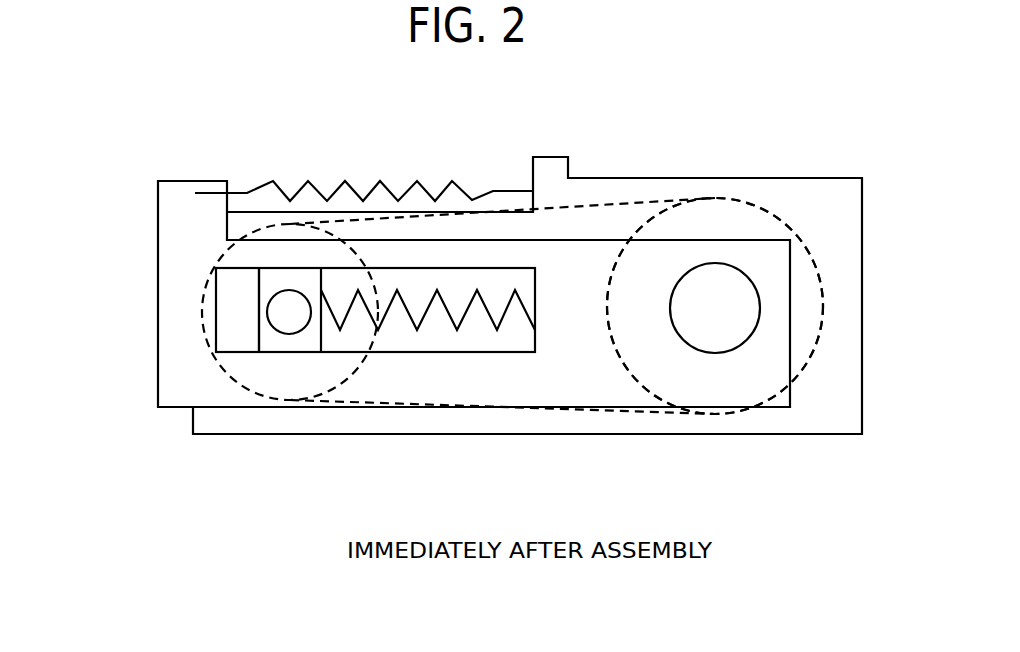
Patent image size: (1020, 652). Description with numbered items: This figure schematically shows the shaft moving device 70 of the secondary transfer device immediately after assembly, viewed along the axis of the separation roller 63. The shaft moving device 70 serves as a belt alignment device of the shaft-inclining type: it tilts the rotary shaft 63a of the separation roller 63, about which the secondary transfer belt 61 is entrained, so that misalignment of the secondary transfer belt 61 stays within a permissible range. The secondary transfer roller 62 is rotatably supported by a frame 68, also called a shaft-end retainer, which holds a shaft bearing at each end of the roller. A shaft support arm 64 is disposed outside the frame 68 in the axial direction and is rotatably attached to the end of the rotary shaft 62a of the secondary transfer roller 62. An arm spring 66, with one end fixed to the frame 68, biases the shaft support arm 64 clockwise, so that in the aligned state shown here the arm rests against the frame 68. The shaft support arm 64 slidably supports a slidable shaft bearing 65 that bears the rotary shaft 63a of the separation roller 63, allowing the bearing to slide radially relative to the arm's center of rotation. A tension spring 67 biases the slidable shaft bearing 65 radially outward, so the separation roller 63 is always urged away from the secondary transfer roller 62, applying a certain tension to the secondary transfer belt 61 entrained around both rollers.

The secondary transfer belt 61 is at (606, 205).
The secondary transfer roller 62 is at (620, 368).
The rotary shaft of the secondary transfer roller 62a is at (735, 353).
The separation roller 63 is at (357, 365).
The rotary shaft of the separation roller 63a is at (282, 330).
The shaft support arm 64 is at (157, 229).
The slidable shaft bearing 65 is at (258, 312).
The arm spring 66 is at (297, 183).
The tension spring 67 is at (467, 320).
The frame 68 is at (798, 178).
The shaft moving device 70 is at (714, 128).